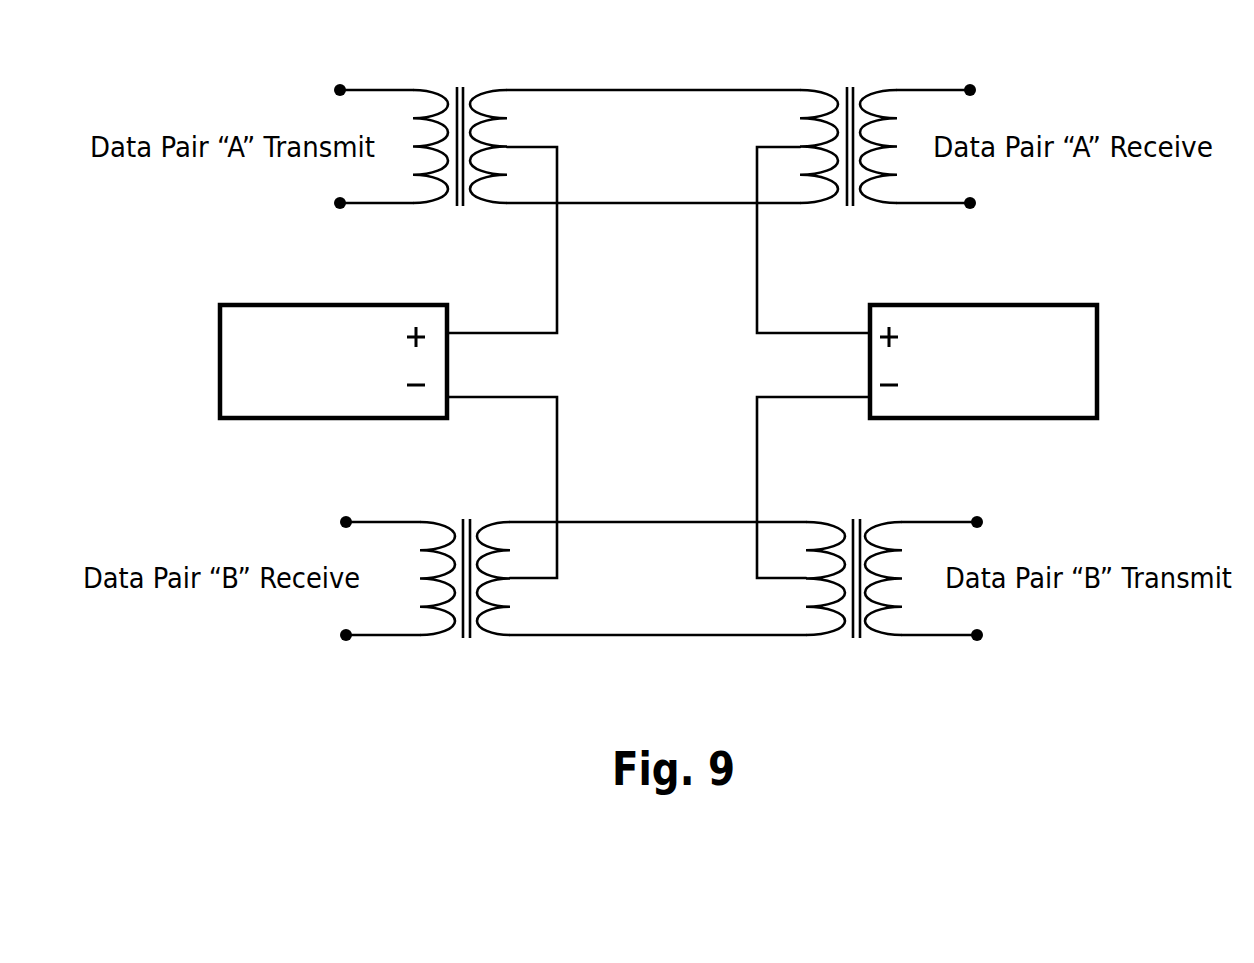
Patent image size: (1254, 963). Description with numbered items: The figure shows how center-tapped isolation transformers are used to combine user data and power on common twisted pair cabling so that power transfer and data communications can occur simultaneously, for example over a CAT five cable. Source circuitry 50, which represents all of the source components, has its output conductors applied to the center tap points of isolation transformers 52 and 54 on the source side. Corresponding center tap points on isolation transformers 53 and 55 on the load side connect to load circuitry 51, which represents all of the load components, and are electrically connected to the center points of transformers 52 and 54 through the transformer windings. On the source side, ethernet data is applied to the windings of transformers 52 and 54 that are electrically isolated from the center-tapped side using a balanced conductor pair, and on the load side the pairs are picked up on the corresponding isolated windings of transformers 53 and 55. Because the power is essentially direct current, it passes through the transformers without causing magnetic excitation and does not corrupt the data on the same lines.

The source circuitry 50 is at (237, 435).
The load circuitry 51 is at (1070, 430).
The isolation transformer 52 is at (488, 82).
The isolation transformer 53 is at (818, 82).
The isolation transformer 54 is at (478, 648).
The isolation transformer 55 is at (832, 647).